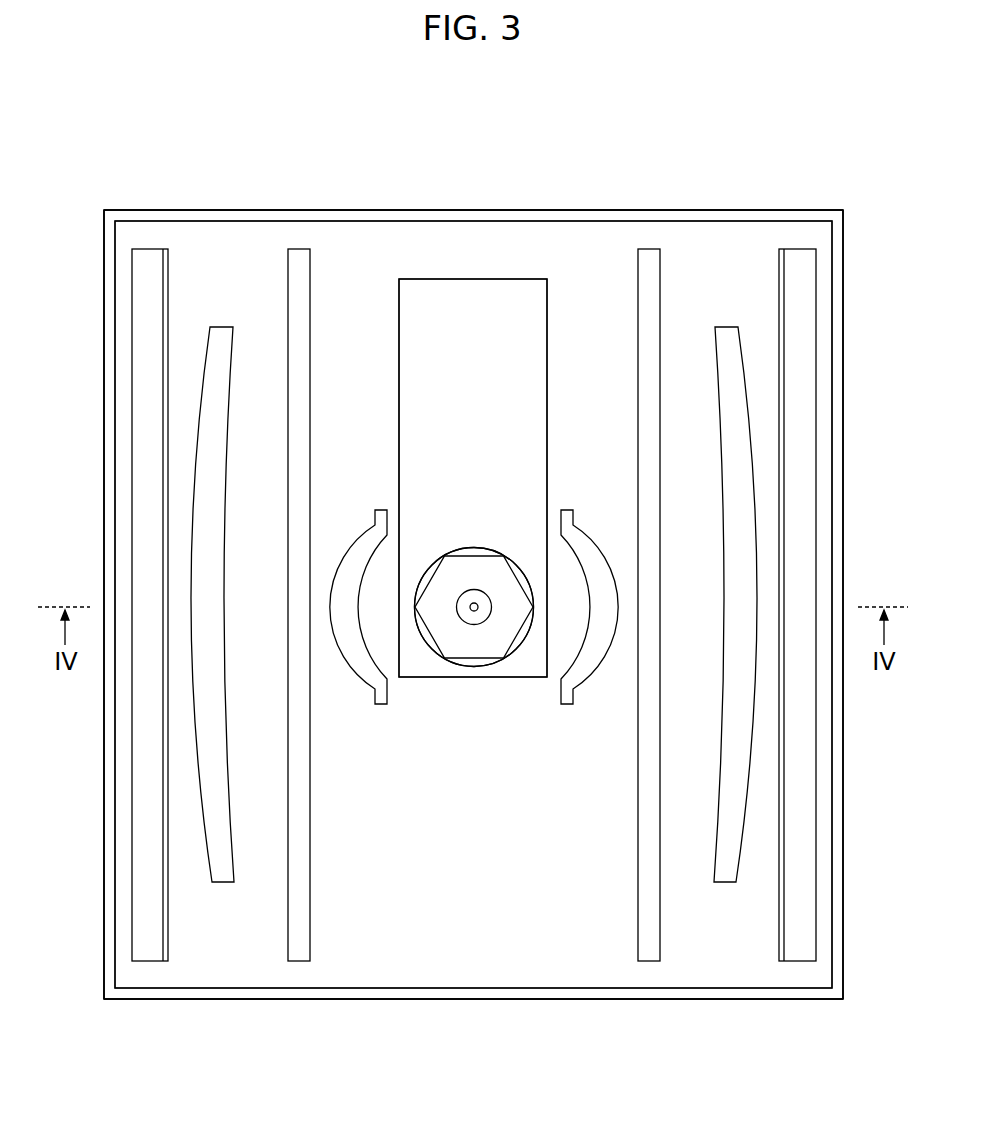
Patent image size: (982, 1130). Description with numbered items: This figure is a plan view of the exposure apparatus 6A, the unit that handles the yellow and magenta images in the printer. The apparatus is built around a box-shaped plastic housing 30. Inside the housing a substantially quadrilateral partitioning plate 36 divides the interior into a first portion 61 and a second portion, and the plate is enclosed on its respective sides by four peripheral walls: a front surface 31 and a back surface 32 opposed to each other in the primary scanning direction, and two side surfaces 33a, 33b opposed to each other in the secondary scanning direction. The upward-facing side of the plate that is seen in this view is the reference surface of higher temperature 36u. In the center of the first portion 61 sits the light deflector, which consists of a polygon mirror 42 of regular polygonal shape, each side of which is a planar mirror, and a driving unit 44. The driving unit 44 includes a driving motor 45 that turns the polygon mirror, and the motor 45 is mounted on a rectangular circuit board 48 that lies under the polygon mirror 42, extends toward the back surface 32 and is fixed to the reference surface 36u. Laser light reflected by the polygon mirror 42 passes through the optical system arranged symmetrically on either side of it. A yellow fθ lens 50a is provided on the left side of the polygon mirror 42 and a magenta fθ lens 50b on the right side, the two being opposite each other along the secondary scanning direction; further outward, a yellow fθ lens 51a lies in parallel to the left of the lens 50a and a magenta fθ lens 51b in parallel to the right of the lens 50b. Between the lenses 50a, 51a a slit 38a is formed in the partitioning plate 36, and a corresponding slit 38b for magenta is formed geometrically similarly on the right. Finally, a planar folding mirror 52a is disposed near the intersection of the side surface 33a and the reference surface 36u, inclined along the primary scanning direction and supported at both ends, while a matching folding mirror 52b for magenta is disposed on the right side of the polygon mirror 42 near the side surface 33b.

The exposure apparatus 6A is at (185, 118).
The housing 30 is at (133, 1018).
The first portion 61 is at (138, 207).
The back surface 32 is at (452, 215).
The front surface 31 is at (466, 999).
The side surface 33a is at (110, 345).
The side surface 33b is at (838, 345).
The partitioning plate 36 is at (353, 250).
The reference surface of higher temperature 36u is at (512, 889).
The folding mirror 52a is at (145, 520).
The folding mirror 52b is at (805, 520).
The slit 38a is at (296, 794).
The slit 38b is at (652, 794).
The fθ lens 51a is at (222, 327).
The fθ lens 51b is at (727, 327).
The driving unit 44 is at (520, 438).
The circuit board 48 is at (505, 300).
The polygon mirror 42 is at (474, 566).
The driving motor 45 is at (468, 668).
The fθ lens 50a is at (355, 658).
The fθ lens 50b is at (588, 552).